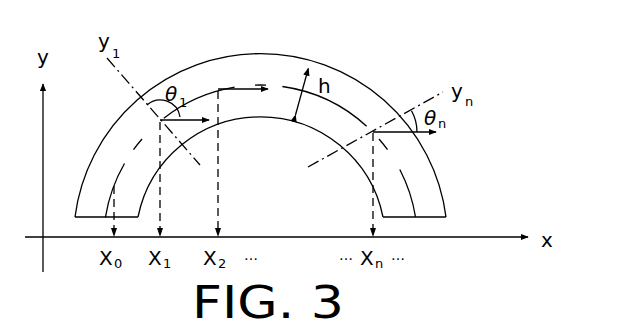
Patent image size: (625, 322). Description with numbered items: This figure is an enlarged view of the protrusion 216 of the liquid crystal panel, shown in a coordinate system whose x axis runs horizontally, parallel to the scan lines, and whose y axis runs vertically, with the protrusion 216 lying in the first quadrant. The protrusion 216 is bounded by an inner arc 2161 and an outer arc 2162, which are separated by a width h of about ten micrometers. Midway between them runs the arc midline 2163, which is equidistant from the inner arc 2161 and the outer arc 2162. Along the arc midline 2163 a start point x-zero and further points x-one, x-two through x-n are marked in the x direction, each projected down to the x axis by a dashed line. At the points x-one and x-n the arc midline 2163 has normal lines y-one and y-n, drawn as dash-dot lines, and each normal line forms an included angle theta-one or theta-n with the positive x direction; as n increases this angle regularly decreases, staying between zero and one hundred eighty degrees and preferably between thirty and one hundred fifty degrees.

The protrusion 216 is at (327, 136).
The inner arc 2161 is at (315, 128).
The outer arc 2162 is at (428, 152).
The arc midline 2163 is at (408, 187).